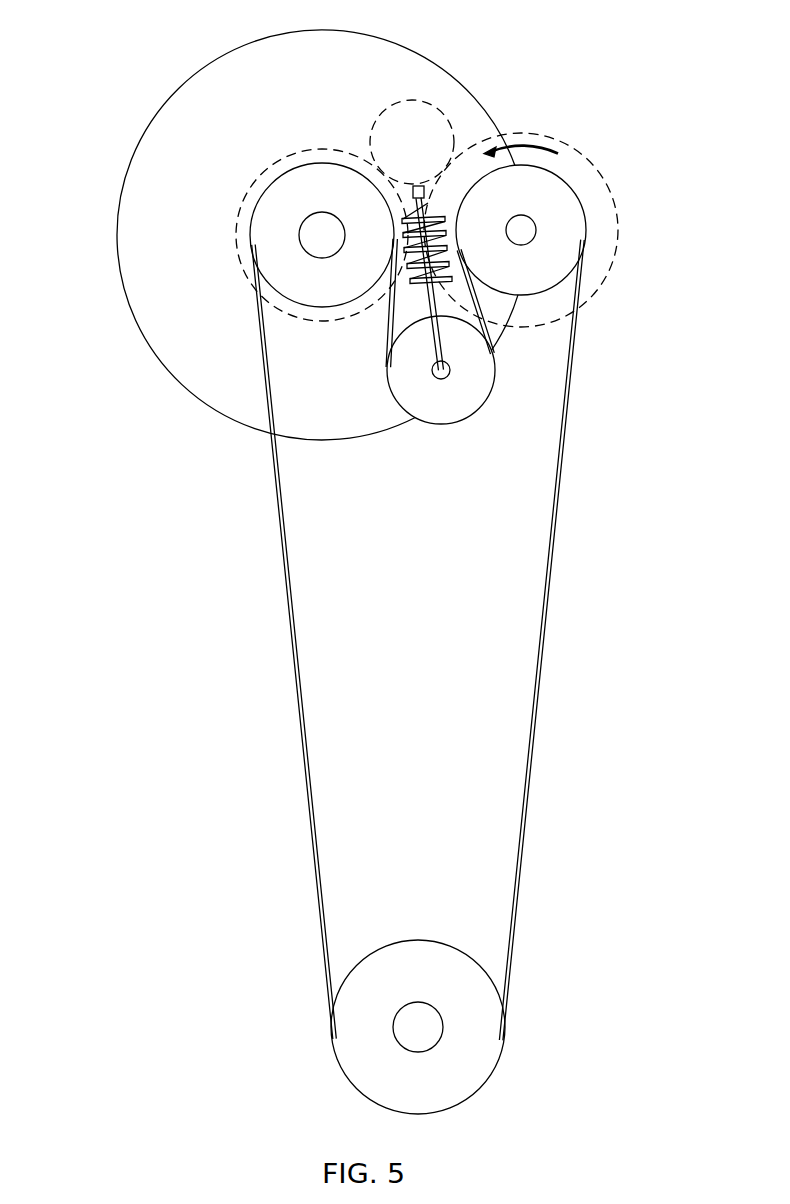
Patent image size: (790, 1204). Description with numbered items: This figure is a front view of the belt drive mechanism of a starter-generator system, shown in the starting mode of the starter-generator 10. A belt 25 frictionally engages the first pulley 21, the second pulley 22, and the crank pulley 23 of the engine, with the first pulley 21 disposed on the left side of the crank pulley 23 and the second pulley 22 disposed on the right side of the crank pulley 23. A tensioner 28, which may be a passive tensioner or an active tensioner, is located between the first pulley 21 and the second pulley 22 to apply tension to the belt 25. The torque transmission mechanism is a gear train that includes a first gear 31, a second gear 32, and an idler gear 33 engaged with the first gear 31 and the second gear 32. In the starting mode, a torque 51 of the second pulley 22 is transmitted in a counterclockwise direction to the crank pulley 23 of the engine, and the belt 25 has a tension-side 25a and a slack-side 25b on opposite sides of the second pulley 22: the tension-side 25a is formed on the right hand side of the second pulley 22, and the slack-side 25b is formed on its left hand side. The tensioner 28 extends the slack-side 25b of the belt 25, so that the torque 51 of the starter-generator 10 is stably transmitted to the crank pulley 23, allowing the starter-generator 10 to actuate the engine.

The starter-generator 10 is at (160, 336).
The first pulley 21 is at (265, 230).
The second pulley 22 is at (572, 229).
The crank pulley 23 is at (490, 1040).
The belt 25 is at (459, 640).
The tension-side 25a is at (576, 380).
The slack-side 25b is at (482, 306).
The tensioner 28 is at (443, 410).
The first gear 31 is at (265, 173).
The second gear 32 is at (597, 172).
The idler gear 33 is at (417, 100).
The torque 51 is at (530, 146).